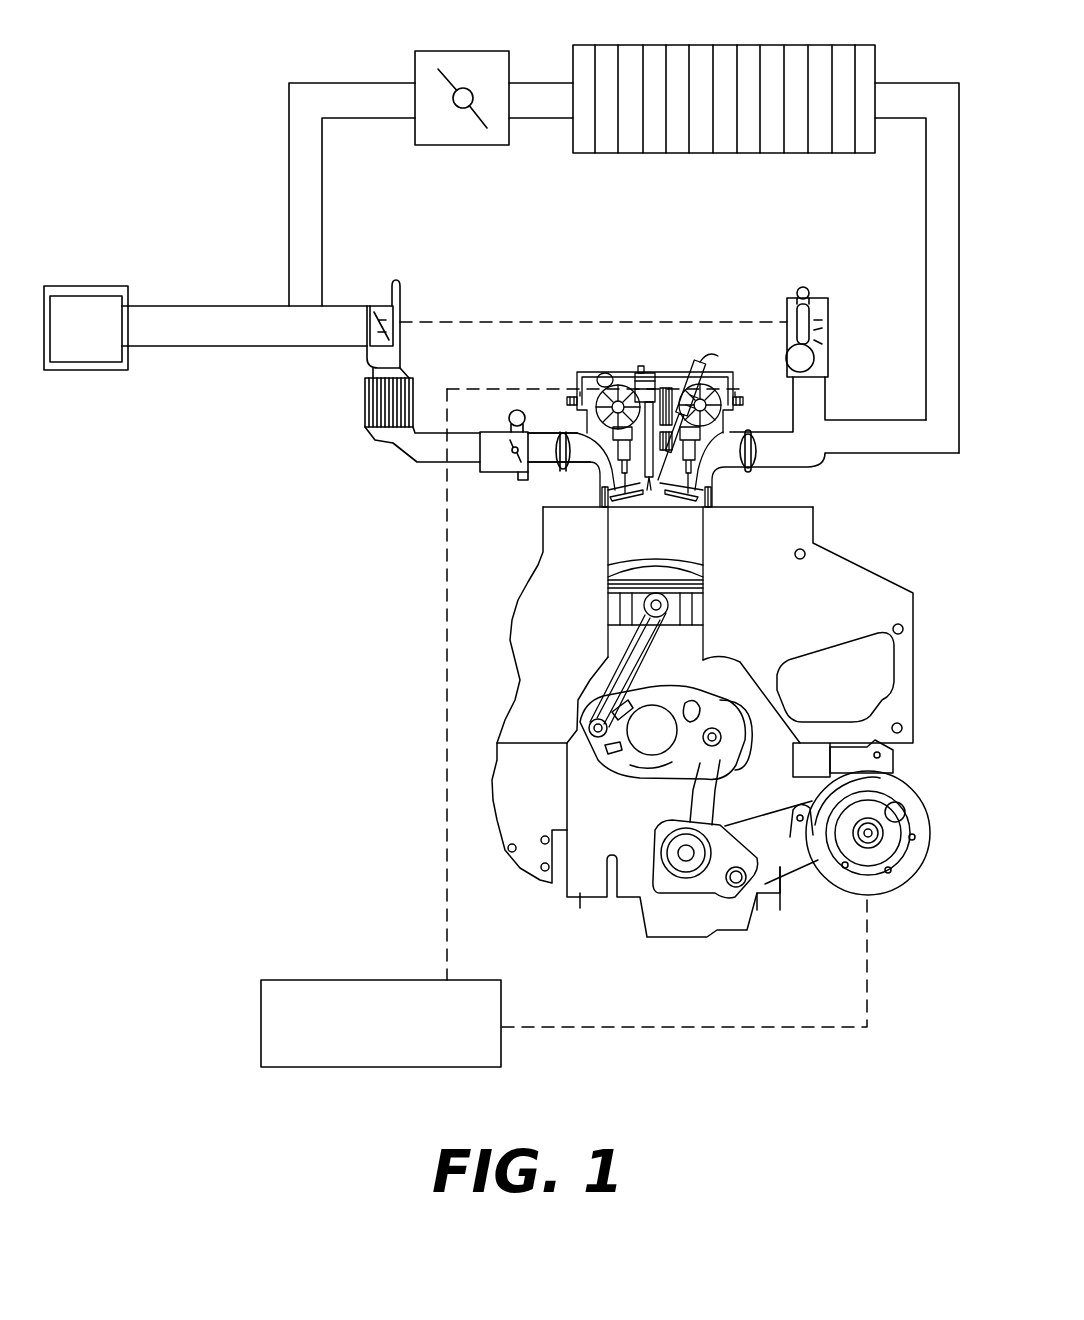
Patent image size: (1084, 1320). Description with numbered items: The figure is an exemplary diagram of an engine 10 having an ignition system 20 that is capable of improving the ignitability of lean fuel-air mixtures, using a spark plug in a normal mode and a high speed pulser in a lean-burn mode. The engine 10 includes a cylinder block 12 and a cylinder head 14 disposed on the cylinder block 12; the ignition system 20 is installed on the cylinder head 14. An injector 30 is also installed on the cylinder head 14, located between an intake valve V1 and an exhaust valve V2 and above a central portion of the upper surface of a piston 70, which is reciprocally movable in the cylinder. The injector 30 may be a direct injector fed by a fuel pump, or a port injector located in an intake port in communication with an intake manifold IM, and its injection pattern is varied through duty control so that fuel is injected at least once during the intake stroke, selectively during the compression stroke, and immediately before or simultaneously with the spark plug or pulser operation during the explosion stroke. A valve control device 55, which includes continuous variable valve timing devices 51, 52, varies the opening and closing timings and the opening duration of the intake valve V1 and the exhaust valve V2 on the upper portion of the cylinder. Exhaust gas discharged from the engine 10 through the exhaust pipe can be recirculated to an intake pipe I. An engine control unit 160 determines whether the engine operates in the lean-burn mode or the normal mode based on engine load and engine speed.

The intake pipe I is at (254, 313).
The engine 10 is at (886, 531).
The cylinder block 12 is at (838, 613).
The cylinder head 14 is at (723, 423).
The ignition system 20 is at (683, 493).
The injector 30 is at (653, 500).
The continuous variable valve timing device 51 is at (707, 390).
The continuous variable valve timing device 52 is at (612, 405).
The valve control device 55 is at (649, 356).
The piston 70 is at (618, 603).
The engine control unit 160 is at (378, 978).
The intake manifold IM is at (590, 450).
The intake valve V1 is at (620, 493).
The exhaust valve V2 is at (712, 486).